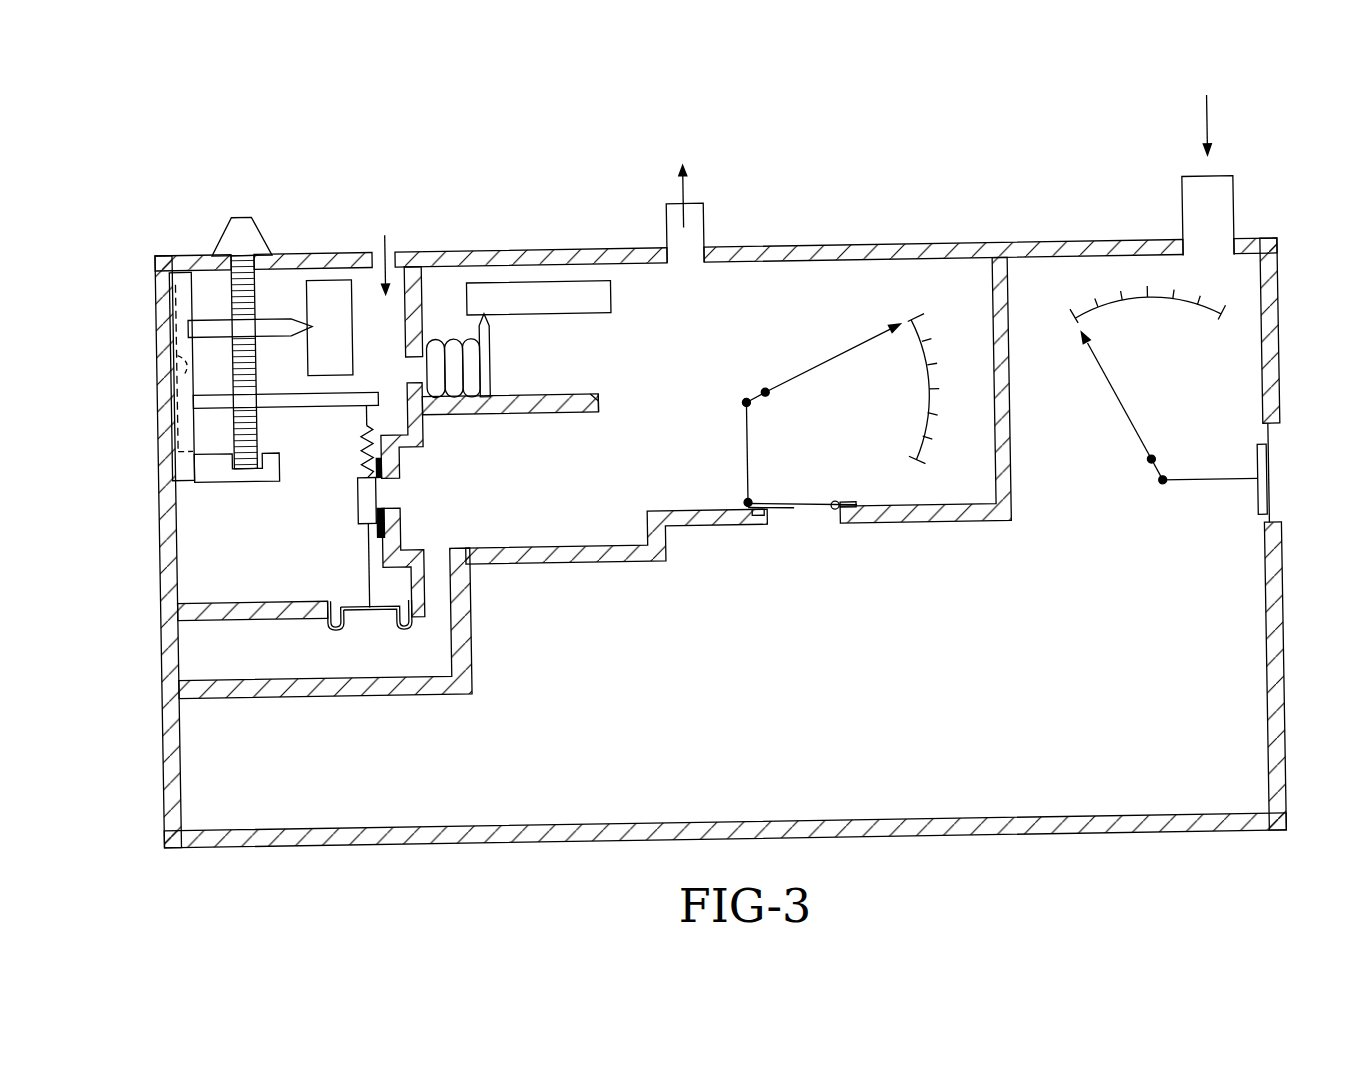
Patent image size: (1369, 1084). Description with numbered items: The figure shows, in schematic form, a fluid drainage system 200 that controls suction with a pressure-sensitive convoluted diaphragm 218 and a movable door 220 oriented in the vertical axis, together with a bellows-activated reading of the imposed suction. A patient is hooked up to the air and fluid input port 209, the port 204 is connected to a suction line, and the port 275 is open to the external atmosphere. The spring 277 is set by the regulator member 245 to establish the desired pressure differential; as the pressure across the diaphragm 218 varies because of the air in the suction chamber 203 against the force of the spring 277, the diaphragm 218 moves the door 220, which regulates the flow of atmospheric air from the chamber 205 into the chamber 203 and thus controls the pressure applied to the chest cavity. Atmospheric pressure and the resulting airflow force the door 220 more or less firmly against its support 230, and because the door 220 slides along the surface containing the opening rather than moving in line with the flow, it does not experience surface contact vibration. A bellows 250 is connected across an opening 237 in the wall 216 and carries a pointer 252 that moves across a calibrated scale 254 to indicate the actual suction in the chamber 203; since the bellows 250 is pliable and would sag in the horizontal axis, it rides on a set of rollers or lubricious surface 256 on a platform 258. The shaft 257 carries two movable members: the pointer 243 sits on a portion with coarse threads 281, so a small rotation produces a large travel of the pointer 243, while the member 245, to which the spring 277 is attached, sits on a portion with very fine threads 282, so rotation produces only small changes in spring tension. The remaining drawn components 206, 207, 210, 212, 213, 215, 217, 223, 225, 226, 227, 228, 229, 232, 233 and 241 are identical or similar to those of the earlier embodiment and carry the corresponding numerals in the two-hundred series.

The fluid drainage system 200 is at (675, 543).
The chamber 203 is at (595, 513).
The port 204 is at (707, 225).
The chamber 205 is at (255, 575).
The valve partition 206 is at (558, 394).
The lower chamber 207 is at (875, 701).
The air and fluid input port 209 is at (1233, 211).
The pressure scale 210 is at (310, 297).
The valve 212 is at (355, 507).
The valve stem 213 is at (388, 498).
The flap valve 215 is at (787, 521).
The wall 216 is at (412, 372).
The airflow pointer 217 is at (818, 363).
The diaphragm 218 is at (350, 614).
The movable door 220 is at (353, 512).
The patient negativity indicator 223 is at (1191, 419).
The indicator diaphragm 225 is at (1266, 454).
The connecting rod 226 is at (1221, 485).
The negativity pointer 227 is at (1100, 370).
The hidden linkage 228 is at (182, 363).
The pivot 229 is at (175, 435).
The support 230 is at (380, 472).
The bellows 232 is at (368, 582).
The pressure regulator assembly 233 is at (610, 348).
The opening 237 is at (413, 375).
The housing 241 is at (157, 522).
The pointer 243 is at (207, 337).
The member 245 is at (202, 398).
The bellows 250 is at (468, 360).
The pointer 252 is at (488, 333).
The calibrated scale 254 is at (550, 283).
The rollers or lubricious surface 256 is at (570, 397).
The shaft 257 is at (165, 351).
The platform 258 is at (223, 229).
The port 275 is at (380, 258).
The spring 277 is at (363, 442).
The coarse threads 281 is at (235, 307).
The fine threads 282 is at (235, 437).